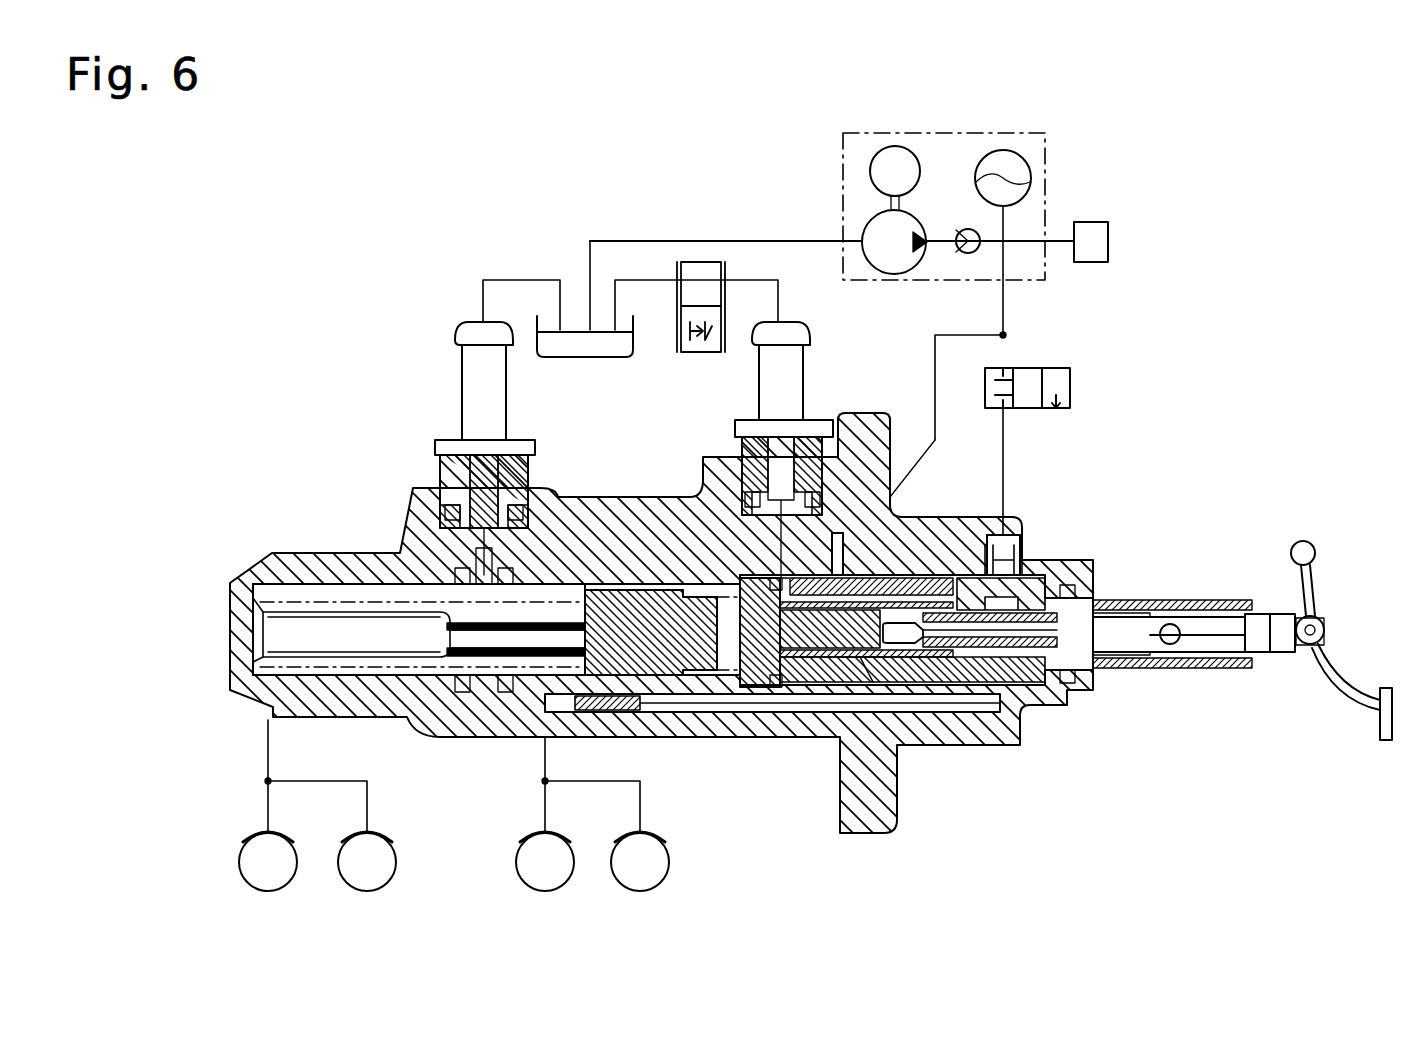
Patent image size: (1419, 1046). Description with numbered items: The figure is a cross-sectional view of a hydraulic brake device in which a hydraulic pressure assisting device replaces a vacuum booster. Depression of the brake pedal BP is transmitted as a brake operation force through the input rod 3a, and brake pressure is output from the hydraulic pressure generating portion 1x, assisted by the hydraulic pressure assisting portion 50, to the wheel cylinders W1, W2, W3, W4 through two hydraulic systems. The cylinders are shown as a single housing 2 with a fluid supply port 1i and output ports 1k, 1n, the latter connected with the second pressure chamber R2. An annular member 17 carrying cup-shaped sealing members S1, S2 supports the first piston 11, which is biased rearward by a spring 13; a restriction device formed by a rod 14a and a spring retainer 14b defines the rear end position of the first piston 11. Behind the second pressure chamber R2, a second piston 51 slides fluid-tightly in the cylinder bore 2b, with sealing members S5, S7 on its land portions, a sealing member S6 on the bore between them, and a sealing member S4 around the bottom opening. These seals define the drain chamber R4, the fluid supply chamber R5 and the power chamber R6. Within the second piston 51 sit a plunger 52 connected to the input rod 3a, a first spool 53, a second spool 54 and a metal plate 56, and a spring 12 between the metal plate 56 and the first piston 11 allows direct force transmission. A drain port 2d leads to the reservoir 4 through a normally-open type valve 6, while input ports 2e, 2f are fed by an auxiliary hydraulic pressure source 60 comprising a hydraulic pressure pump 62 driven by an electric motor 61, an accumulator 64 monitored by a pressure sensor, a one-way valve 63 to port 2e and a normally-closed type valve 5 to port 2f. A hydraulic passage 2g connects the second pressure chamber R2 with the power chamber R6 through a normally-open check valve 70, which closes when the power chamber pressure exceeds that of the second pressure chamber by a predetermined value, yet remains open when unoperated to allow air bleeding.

The hydraulic pressure generating portion 1x is at (250, 560).
The output port 1k is at (275, 718).
The fluid supply port 1i is at (392, 575).
The output port 1n is at (540, 725).
The housing 2 is at (1010, 515).
The cylinder bore 2b is at (403, 690).
The drain port 2d is at (838, 530).
The input port 2e is at (848, 560).
The input port 2f is at (1000, 548).
The hydraulic passage 2g is at (752, 688).
The reservoir 4 is at (600, 348).
The normally-closed type valve 5 is at (1045, 373).
The normally-open type valve 6 is at (703, 352).
The first piston 11 is at (628, 608).
The spring 12 is at (702, 588).
The spring 13 is at (422, 590).
The rod 14a is at (553, 633).
The spring retainer 14b is at (345, 608).
The annular member 17 is at (490, 700).
The hydraulic pressure assisting portion 50 is at (1195, 620).
The second piston 51 is at (980, 565).
The plunger 52 is at (1160, 665).
The first spool 53 is at (1045, 712).
The second spool 54 is at (900, 745).
The metal plate 56 is at (723, 690).
The auxiliary hydraulic pressure source 60 is at (1050, 200).
The electric motor 61 is at (868, 175).
The hydraulic pressure pump 62 is at (872, 265).
The one-way valve 63 is at (962, 253).
The accumulator 64 is at (1028, 165).
The check valve 70 is at (606, 696).
The input rod 3a is at (1262, 650).
The brake pedal BP is at (1322, 655).
The second pressure chamber R2 is at (705, 685).
The drain chamber R4 is at (770, 685).
The fluid supply chamber R5 is at (925, 725).
The power chamber R6 is at (1008, 712).
The sealing member S1 is at (458, 680).
The sealing member S2 is at (500, 683).
The sealing member S4 is at (1075, 680).
The sealing member S5 is at (768, 688).
The sealing member S6 is at (883, 770).
The sealing member S7 is at (985, 732).
The wheel cylinder W1 is at (278, 820).
The wheel cylinder W2 is at (375, 825).
The wheel cylinder W3 is at (533, 838).
The wheel cylinder W4 is at (633, 828).